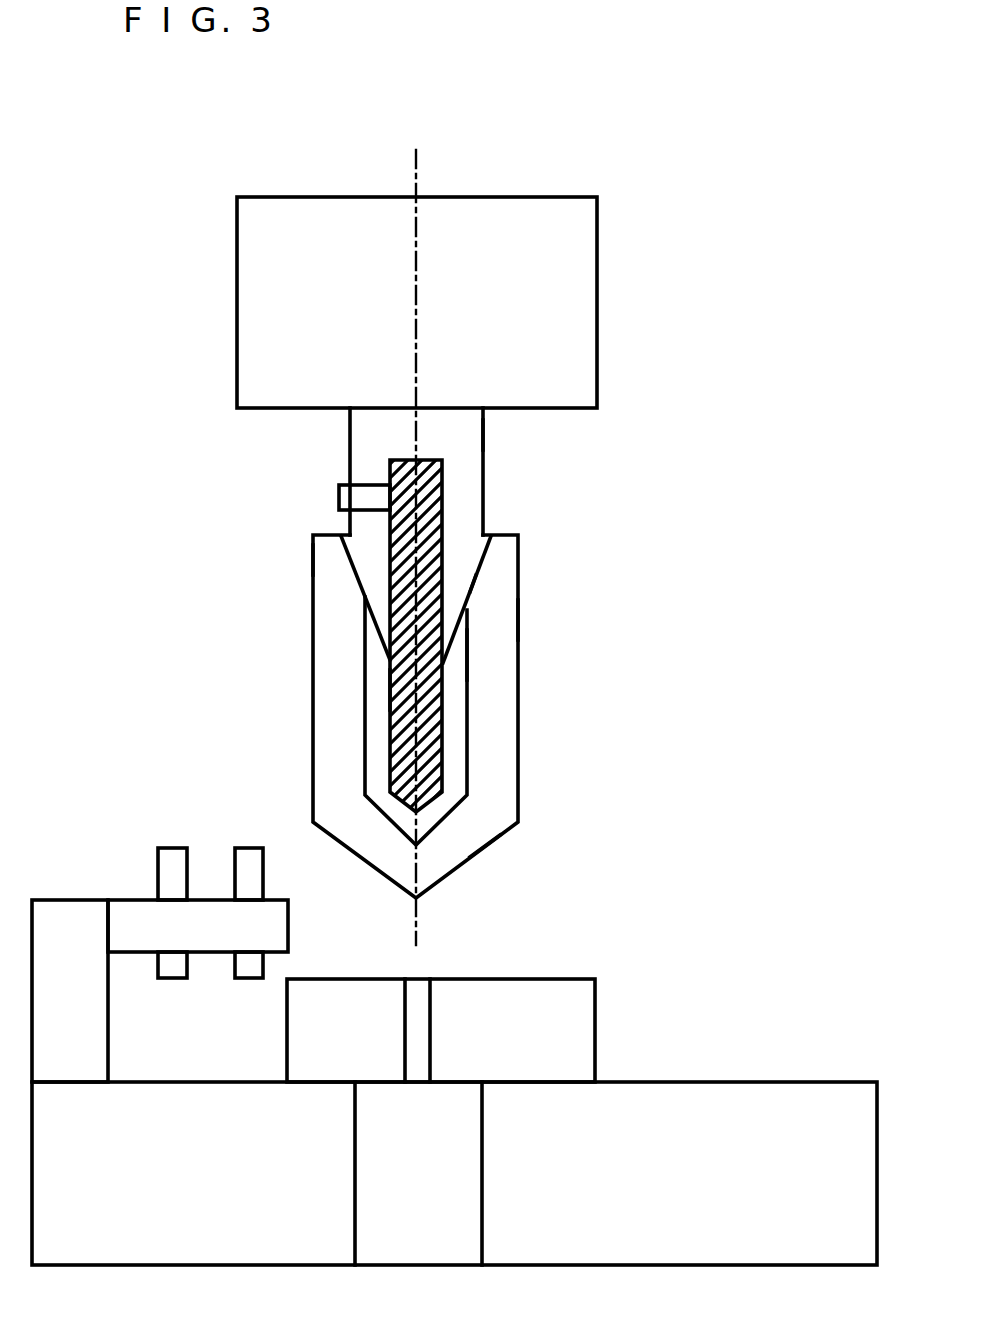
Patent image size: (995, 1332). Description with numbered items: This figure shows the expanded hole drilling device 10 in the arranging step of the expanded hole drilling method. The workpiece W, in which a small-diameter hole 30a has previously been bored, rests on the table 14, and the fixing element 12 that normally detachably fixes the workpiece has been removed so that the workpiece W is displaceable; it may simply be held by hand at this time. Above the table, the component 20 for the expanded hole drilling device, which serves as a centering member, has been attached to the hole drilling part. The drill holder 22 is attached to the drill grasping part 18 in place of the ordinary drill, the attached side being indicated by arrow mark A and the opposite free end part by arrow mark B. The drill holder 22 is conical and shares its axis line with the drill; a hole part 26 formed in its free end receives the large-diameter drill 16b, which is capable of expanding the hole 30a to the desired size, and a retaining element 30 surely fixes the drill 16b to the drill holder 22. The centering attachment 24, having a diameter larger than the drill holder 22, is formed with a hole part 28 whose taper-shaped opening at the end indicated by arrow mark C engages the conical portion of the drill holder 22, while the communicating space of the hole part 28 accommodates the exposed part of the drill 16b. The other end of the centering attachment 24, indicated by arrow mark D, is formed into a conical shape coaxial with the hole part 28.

The expanded hole drilling device 10 is at (433, 116).
The fixing element 12 is at (158, 870).
The table 14 is at (673, 1082).
The drill having a large diameter 16b is at (390, 688).
The drill grasping part 18 is at (237, 250).
The component for the expanded hole drilling device 20 is at (677, 564).
The drill holder 22 is at (483, 512).
The centering attachment 24 is at (520, 718).
The hole part 26 is at (442, 508).
The hole part 28 is at (451, 646).
The retaining element 30 is at (343, 482).
The hole 30a is at (412, 1042).
The side on which the drill holder is attached to the drill grasping part A is at (492, 431).
The free end part of the drill holder B is at (488, 582).
The end part of the centering attachment on the drill holder side C is at (305, 554).
The other end part of the centering attachment D is at (494, 845).
The workpiece W is at (605, 996).